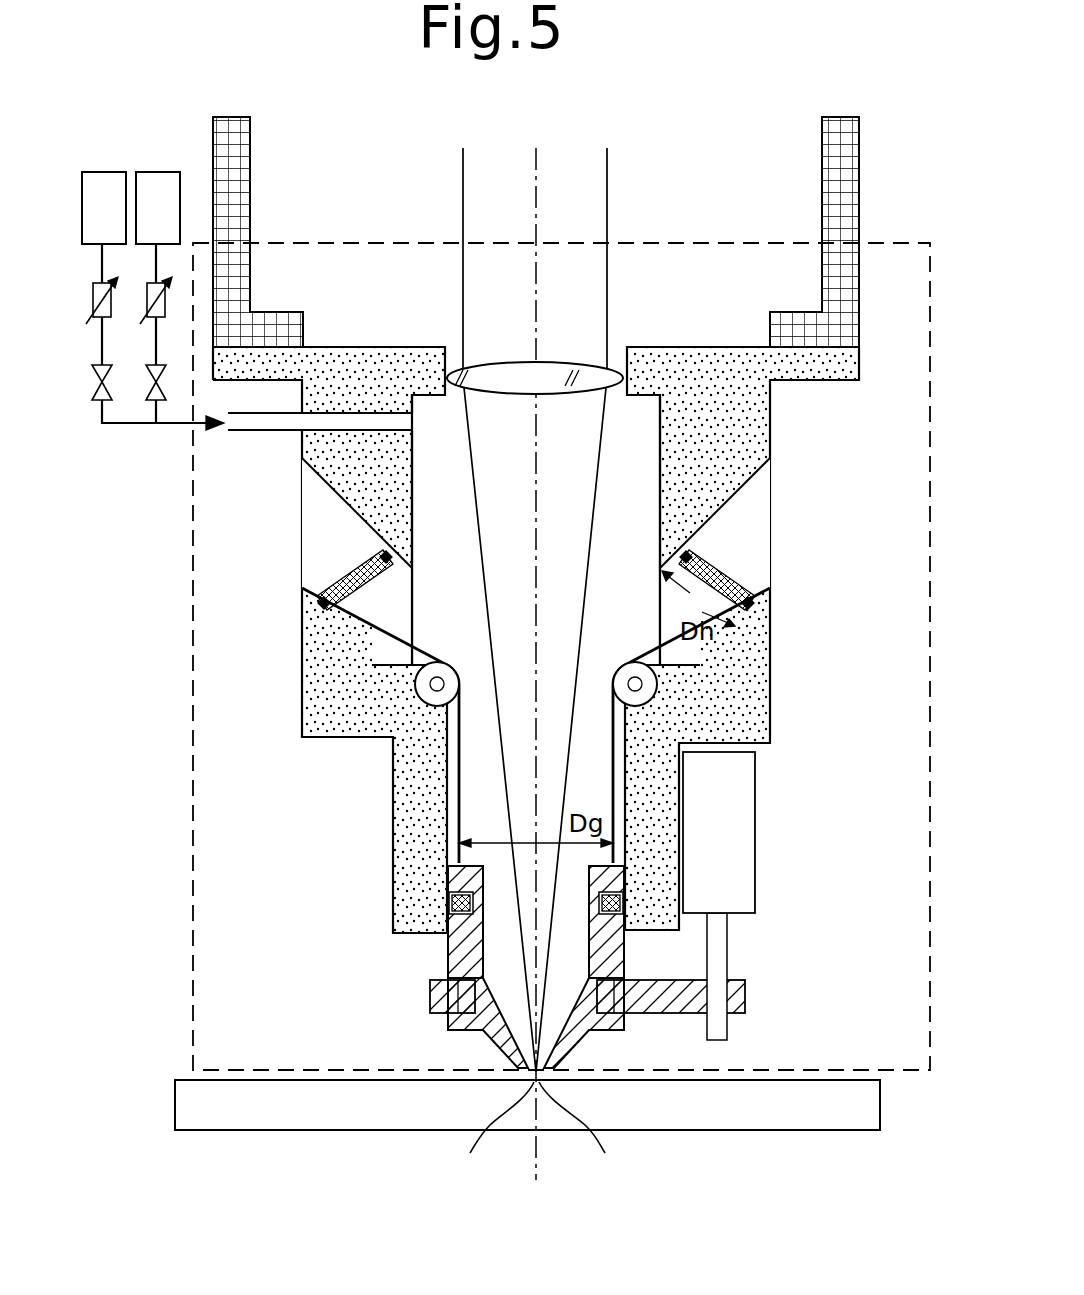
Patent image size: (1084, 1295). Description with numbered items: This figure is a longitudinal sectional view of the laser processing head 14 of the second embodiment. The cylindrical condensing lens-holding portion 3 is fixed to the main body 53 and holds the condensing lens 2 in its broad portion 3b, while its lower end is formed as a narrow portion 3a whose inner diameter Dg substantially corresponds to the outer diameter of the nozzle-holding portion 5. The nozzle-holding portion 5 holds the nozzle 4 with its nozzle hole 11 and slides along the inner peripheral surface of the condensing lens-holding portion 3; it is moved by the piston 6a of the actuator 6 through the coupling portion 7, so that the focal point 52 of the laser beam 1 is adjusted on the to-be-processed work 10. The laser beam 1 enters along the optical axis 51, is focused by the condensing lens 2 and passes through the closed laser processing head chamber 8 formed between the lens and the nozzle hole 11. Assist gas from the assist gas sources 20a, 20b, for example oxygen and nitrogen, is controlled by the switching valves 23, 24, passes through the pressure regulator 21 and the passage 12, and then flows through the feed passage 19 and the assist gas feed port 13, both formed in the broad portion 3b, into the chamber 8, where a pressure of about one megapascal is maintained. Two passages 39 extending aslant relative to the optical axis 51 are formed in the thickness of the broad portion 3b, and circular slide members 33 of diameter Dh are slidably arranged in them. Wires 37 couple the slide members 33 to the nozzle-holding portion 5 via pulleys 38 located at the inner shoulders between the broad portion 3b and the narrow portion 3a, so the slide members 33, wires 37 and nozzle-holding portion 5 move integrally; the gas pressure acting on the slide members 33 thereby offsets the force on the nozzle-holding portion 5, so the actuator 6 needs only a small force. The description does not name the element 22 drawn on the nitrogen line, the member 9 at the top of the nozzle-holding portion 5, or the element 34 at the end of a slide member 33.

The laser beam 1 is at (607, 170).
The condensing lens 2 is at (582, 368).
The condensing lens-holding portion 3 is at (546, 597).
The narrow portion 3a is at (383, 797).
The broad portion 3b is at (800, 418).
The nozzle 4 is at (613, 1035).
The nozzle-holding portion 5 is at (440, 957).
The actuator 6 is at (743, 817).
The piston 6a is at (720, 936).
The coupling portion 7 is at (745, 1000).
The laser processing head chamber 8 is at (619, 487).
The seal ring 9 is at (456, 888).
The to-be-processed work 10 is at (716, 1112).
The nozzle hole 11 is at (491, 1137).
The passage 12 is at (163, 431).
The assist gas feed port 13 is at (410, 416).
The laser processing head 14 is at (561, 654).
The feed passage 19 is at (250, 432).
The assist gas source 20a is at (100, 172).
The assist gas source 20b is at (158, 172).
The pressure regulator 21 is at (93, 297).
The pressure regulator 22 is at (148, 297).
The switching valve 23 is at (92, 382).
The switching valve 24 is at (146, 382).
The slide members 33 is at (333, 585).
The rod end 34 is at (750, 612).
The wires 37 is at (387, 623).
The pulleys 38 is at (427, 694).
The passages 39 is at (325, 482).
The optical axis 51 is at (537, 168).
The focal point 52 is at (581, 1137).
The main body 53 is at (845, 213).